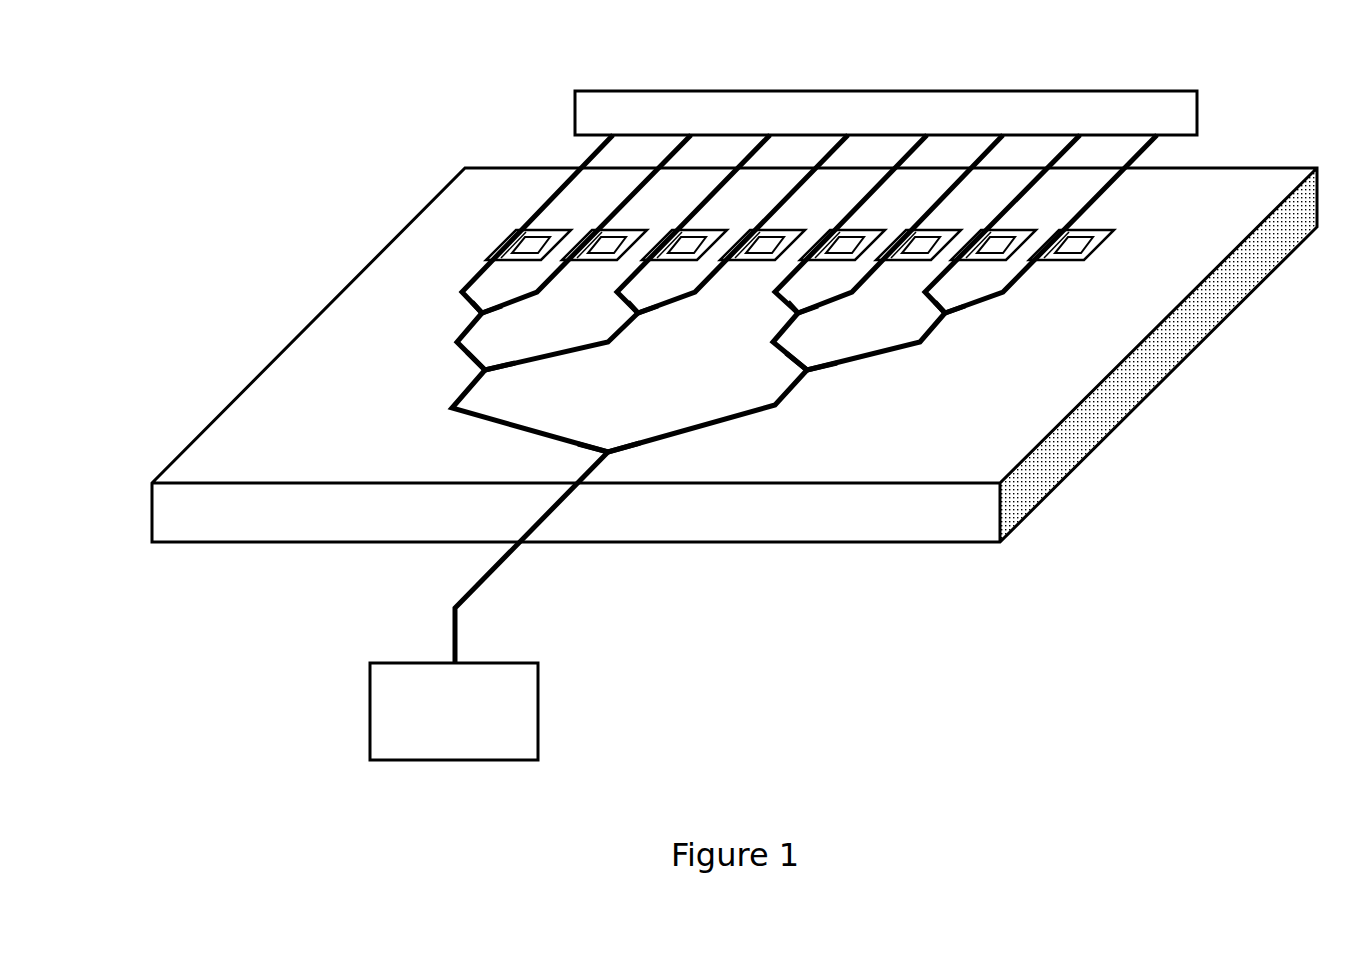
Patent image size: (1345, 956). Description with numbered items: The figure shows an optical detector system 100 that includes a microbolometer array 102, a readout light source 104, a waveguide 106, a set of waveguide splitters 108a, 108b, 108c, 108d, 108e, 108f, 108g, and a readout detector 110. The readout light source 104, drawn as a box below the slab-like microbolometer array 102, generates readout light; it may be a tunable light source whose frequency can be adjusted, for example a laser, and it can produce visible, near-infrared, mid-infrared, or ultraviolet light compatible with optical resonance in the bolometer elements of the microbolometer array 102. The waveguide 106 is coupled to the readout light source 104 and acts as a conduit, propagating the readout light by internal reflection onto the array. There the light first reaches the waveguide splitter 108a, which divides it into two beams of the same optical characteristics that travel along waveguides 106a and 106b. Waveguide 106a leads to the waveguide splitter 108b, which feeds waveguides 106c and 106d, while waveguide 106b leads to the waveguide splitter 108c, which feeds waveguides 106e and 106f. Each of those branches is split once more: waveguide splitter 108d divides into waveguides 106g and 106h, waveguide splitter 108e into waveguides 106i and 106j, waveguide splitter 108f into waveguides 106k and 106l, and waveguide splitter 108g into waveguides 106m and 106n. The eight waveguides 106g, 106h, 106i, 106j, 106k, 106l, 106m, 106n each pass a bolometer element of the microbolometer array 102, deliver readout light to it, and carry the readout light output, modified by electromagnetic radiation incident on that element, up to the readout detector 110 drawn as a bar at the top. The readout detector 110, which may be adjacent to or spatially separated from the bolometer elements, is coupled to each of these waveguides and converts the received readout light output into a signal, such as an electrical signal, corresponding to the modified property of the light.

The optical detector system 100 is at (580, 36).
The microbolometer array 102 is at (1103, 238).
The readout light source 104 is at (502, 663).
The waveguide 106 is at (455, 592).
The waveguide 106a is at (500, 418).
The waveguide 106b is at (792, 392).
The waveguide 106c is at (456, 343).
The waveguide 106d is at (603, 347).
The waveguide 106e is at (772, 347).
The waveguide 106f is at (897, 350).
The waveguide 106g is at (460, 297).
The waveguide 106h is at (540, 296).
The waveguide 106i is at (617, 282).
The waveguide 106j is at (692, 297).
The waveguide 106k is at (781, 284).
The waveguide 106l is at (855, 293).
The waveguide 106m is at (858, 270).
The waveguide 106n is at (990, 298).
The waveguide splitter 108a is at (615, 455).
The waveguide splitter 108b is at (478, 373).
The waveguide splitter 108c is at (812, 374).
The waveguide splitter 108d is at (484, 315).
The waveguide splitter 108e is at (641, 320).
The waveguide splitter 108f is at (801, 318).
The waveguide splitter 108g is at (948, 318).
The readout detector 110 is at (1082, 91).